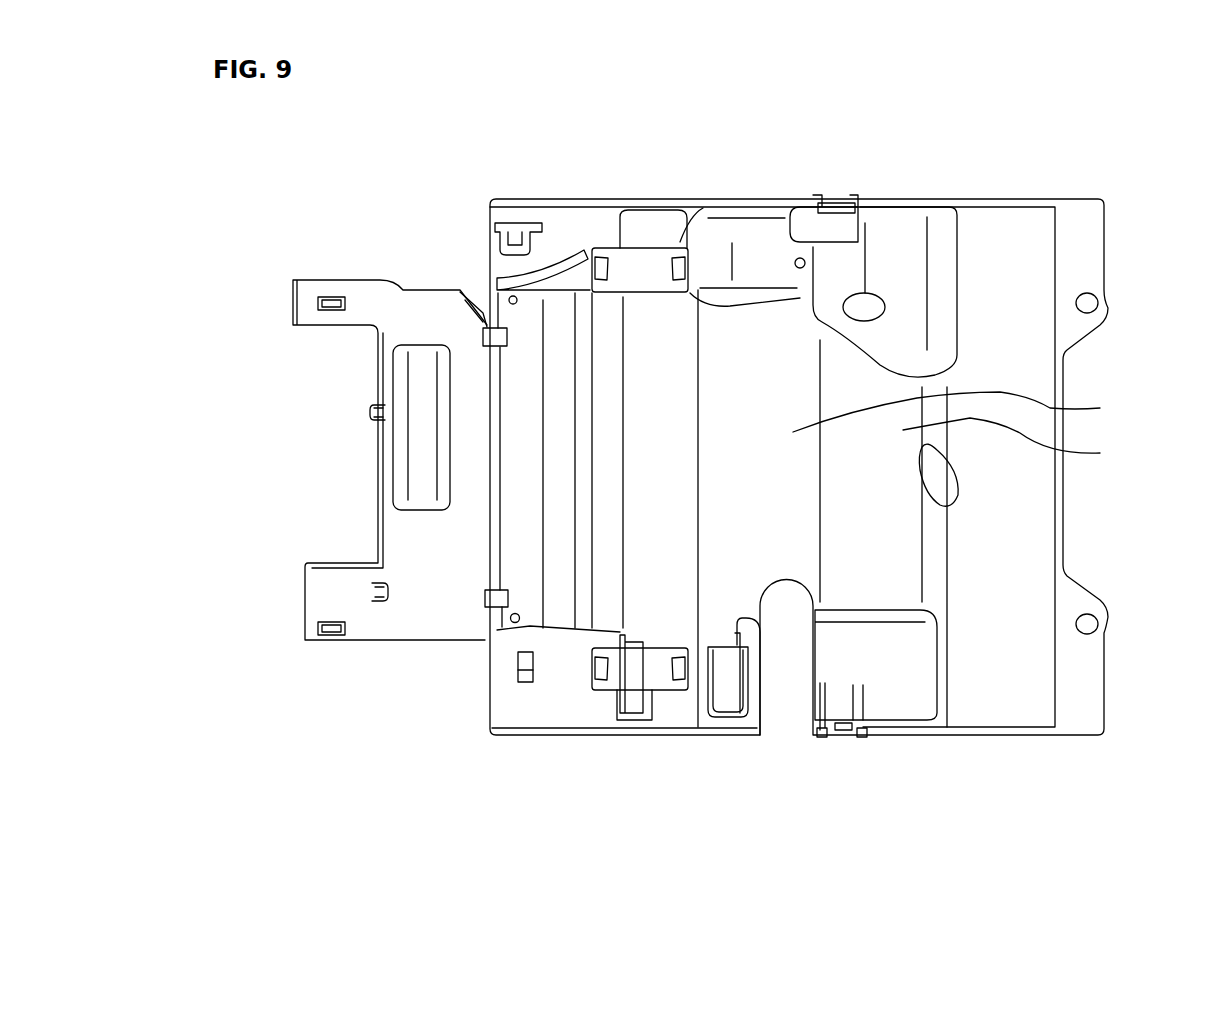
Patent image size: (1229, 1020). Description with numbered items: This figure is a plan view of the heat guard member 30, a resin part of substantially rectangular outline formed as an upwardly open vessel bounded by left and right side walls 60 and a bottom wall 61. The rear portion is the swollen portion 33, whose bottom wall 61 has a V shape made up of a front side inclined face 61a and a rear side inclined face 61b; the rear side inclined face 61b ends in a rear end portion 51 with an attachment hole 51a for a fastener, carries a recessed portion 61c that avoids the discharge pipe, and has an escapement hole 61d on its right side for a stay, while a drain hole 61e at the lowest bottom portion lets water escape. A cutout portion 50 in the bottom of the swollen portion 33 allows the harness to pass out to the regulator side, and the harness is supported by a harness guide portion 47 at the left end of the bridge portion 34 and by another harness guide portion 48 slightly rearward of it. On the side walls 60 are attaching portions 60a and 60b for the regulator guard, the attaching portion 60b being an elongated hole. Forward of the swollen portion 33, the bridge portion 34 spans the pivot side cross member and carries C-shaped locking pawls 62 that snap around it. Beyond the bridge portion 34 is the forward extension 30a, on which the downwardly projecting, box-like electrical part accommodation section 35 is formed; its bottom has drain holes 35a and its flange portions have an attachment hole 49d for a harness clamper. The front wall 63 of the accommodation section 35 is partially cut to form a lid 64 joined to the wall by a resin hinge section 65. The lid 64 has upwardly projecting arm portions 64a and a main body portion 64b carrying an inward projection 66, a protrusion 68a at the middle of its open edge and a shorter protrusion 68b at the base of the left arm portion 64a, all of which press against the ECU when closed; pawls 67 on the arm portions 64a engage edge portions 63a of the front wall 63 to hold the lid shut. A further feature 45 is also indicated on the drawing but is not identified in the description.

The heat guard member 30 is at (480, 196).
The forward extension 30a is at (600, 228).
The swollen portion 33 is at (778, 362).
The bridge portion 34 is at (660, 393).
The electrical part accommodation section 35 is at (530, 490).
The drain hole 35a is at (490, 232).
The hook 45 is at (572, 250).
The harness guide portion 47 is at (633, 707).
The harness guide portion 48 is at (728, 703).
The attachment hole 49d is at (525, 683).
The cutout portion 50 is at (785, 707).
The rear end portion 51 is at (1107, 302).
The attachment hole 51a is at (1090, 310).
The side walls 60 is at (897, 202).
The attaching portion 60a is at (838, 210).
The attaching portion 60b is at (840, 730).
The bottom wall 61 is at (1150, 405).
The front side inclined face 61a is at (970, 412).
The rear side inclined face 61b is at (1025, 442).
The recessed portion 61c is at (947, 487).
The escapement hole 61d is at (875, 308).
The drain hole 61e is at (800, 257).
The locking pawl 62 is at (600, 270).
The front wall 63 is at (498, 323).
The edge portions 63a is at (480, 343).
The lid 64 is at (308, 278).
The arm portions 64a is at (360, 320).
The main body portion 64b is at (385, 350).
The resin hinge section 65 is at (493, 512).
The projection 66 is at (415, 452).
The pawl 67 is at (318, 302).
The protrusion 68a is at (372, 411).
The protrusion 68b is at (372, 594).